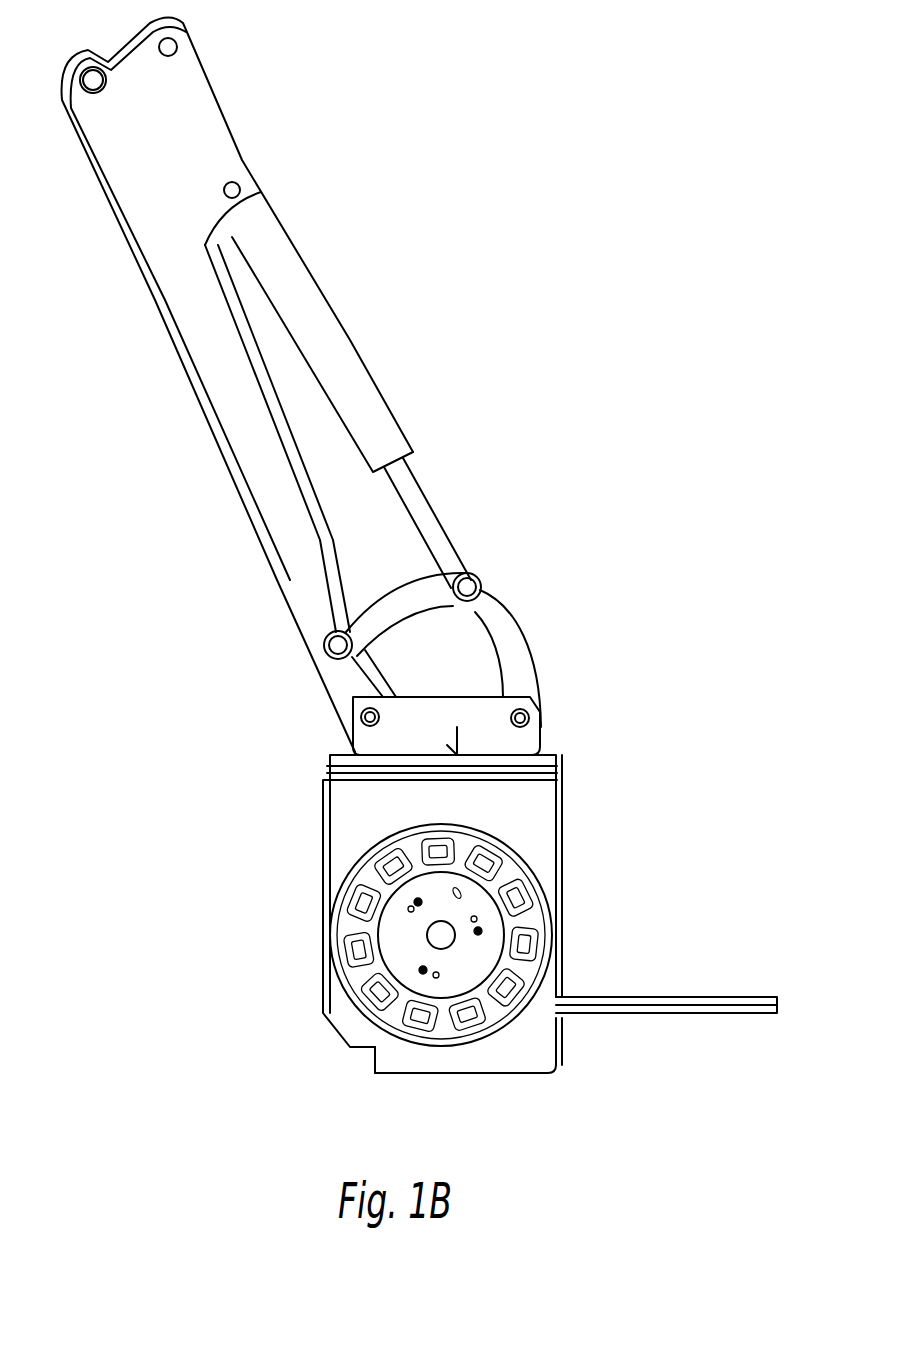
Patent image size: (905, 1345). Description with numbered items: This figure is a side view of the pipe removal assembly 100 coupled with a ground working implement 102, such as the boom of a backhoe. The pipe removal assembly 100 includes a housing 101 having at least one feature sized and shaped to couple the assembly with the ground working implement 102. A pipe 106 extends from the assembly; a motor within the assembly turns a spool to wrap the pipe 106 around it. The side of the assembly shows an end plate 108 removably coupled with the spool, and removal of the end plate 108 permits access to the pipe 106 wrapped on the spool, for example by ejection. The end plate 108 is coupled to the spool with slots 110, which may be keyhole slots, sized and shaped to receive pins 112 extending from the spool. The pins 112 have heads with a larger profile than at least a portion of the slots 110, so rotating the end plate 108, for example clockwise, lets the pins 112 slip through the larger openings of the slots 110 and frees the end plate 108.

The pipe removal assembly 100 is at (419, 571).
The housing 101 is at (342, 803).
The ground working implement 102 is at (382, 412).
The pipe 106 is at (698, 1013).
The end plate 108 is at (507, 873).
The slots 110 is at (411, 909).
The pins 112 is at (418, 902).